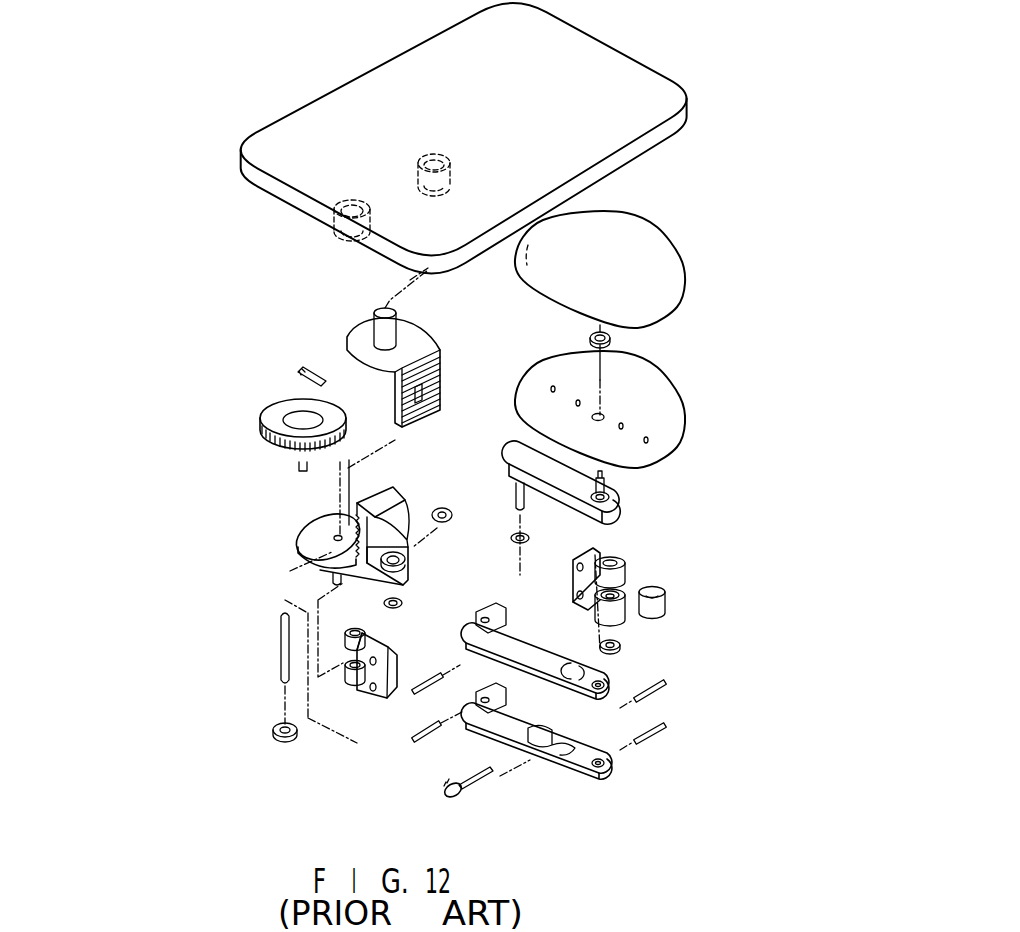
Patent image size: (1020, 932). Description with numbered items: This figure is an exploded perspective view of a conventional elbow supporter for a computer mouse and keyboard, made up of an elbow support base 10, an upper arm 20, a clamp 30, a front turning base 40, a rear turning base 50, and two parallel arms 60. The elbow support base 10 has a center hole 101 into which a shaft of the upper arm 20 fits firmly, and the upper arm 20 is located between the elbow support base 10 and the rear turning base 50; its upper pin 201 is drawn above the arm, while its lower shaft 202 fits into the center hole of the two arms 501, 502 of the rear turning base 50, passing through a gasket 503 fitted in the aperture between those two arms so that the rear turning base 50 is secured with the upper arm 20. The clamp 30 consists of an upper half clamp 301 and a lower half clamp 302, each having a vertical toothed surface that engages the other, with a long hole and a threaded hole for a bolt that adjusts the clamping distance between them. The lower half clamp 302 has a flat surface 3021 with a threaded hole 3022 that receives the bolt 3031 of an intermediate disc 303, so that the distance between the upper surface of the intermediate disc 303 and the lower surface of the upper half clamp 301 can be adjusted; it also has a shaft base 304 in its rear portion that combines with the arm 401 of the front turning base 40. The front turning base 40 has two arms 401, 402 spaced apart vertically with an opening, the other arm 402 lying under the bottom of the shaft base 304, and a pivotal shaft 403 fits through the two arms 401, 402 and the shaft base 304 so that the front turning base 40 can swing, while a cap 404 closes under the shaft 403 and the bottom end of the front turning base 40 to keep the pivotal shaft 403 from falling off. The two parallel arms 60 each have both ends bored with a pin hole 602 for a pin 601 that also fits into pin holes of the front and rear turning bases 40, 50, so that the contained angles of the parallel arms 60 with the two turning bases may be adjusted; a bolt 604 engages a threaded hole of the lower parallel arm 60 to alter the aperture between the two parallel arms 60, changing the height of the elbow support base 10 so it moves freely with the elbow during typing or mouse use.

The elbow support base 10 is at (750, 290).
The center hole 101 is at (603, 413).
The upper arm 20 is at (503, 447).
The pivot pin 201 is at (613, 487).
The lower shaft 202 is at (519, 499).
The clamp 30 is at (210, 245).
The upper half clamp 301 is at (428, 327).
The lower half clamp 302 is at (176, 511).
The flat surface 3021 is at (305, 533).
The threaded hole 3022 is at (308, 551).
The intermediate disc 303 is at (275, 420).
The bolt 3031 is at (297, 469).
The shaft base 304 is at (410, 537).
The front turning base 40 is at (396, 697).
The arm 401 is at (367, 628).
The arm 402 is at (352, 687).
The pivotal shaft 403 is at (285, 657).
The cap 404 is at (277, 735).
The rear turning base 50 is at (622, 581).
The arm 501 is at (617, 557).
The arm 502 is at (618, 622).
The gasket 503 is at (667, 600).
The parallel arms 60 is at (543, 622).
The pin 601 is at (420, 742).
The pin hole 602 is at (482, 617).
The bolt 604 is at (472, 792).